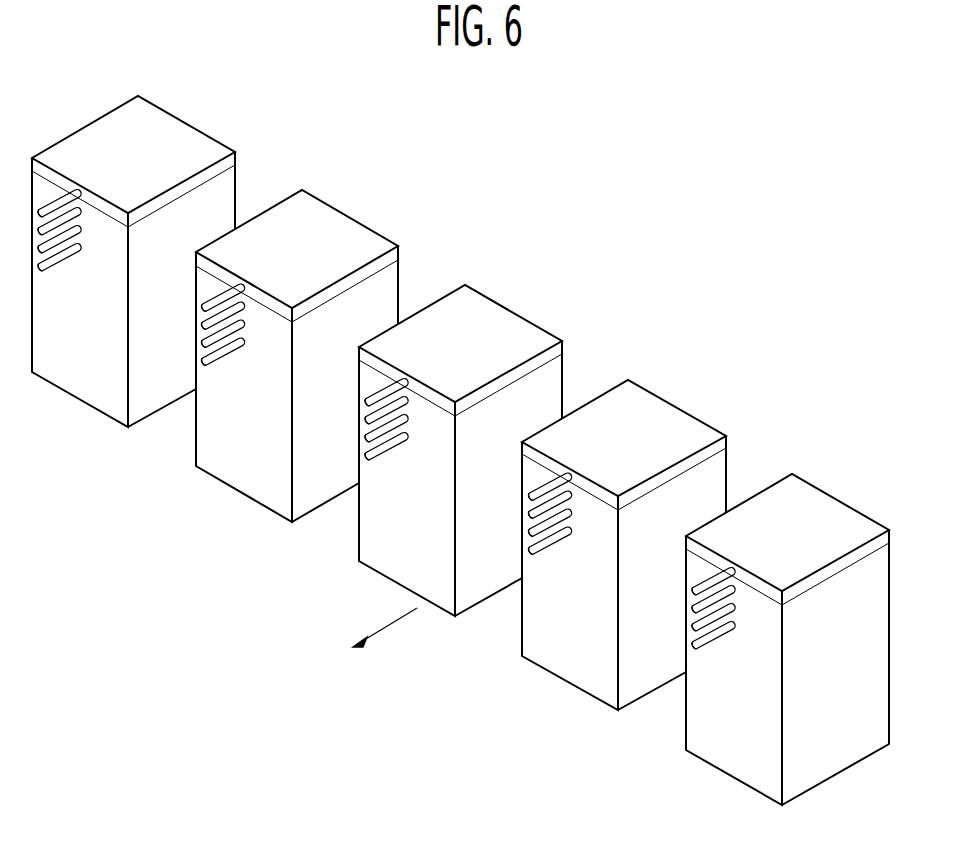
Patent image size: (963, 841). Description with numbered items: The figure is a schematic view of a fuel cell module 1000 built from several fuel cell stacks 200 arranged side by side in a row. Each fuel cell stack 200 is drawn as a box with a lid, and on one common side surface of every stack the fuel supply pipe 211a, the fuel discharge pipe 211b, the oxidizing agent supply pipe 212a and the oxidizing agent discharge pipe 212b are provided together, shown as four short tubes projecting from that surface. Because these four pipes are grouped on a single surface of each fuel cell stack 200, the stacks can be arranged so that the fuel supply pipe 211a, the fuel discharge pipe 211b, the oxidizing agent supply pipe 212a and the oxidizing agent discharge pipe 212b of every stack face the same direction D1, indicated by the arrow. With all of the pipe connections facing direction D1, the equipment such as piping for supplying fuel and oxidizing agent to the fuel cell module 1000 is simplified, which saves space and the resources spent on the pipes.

The fuel cell module 1000 is at (460, 450).
The fuel cell stack 200 is at (180, 135).
The fuel supply pipe 211a is at (362, 403).
The fuel discharge pipe 211b is at (363, 422).
The oxidizing agent supply pipe 212a is at (365, 440).
The oxidizing agent discharge pipe 212b is at (367, 458).
The direction D1 is at (370, 639).